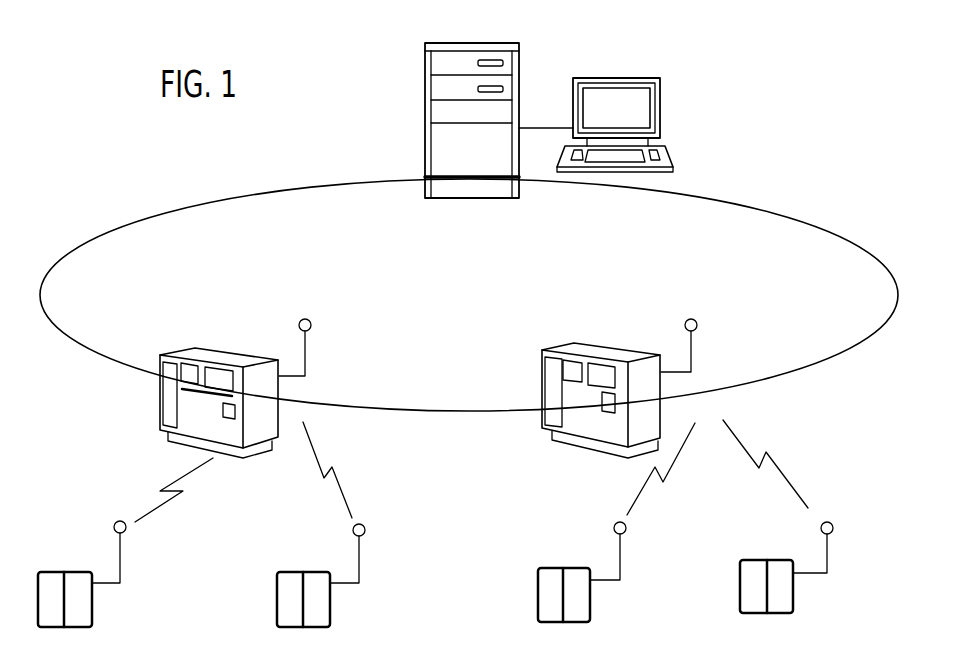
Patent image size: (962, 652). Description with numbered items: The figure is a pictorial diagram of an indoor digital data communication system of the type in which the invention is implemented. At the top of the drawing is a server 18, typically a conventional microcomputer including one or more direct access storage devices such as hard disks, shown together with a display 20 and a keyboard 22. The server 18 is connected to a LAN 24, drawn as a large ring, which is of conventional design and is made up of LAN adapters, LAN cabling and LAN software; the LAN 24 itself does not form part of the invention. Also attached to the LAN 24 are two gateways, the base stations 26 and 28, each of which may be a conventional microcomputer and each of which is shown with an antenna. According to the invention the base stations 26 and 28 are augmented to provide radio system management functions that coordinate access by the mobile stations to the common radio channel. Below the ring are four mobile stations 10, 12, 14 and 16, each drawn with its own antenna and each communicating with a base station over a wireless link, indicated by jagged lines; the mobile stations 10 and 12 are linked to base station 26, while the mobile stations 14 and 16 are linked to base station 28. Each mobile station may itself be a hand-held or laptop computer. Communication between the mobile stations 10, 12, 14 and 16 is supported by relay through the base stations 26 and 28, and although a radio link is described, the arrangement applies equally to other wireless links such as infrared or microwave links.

The mobile station 10 is at (92, 570).
The mobile station 12 is at (303, 572).
The mobile station 14 is at (563, 567).
The mobile station 16 is at (778, 537).
The server 18 is at (423, 73).
The monitor 20 is at (662, 93).
The keyboard 22 is at (673, 159).
The LAN 24 is at (873, 333).
The base station 26 is at (223, 352).
The base station 28 is at (620, 321).